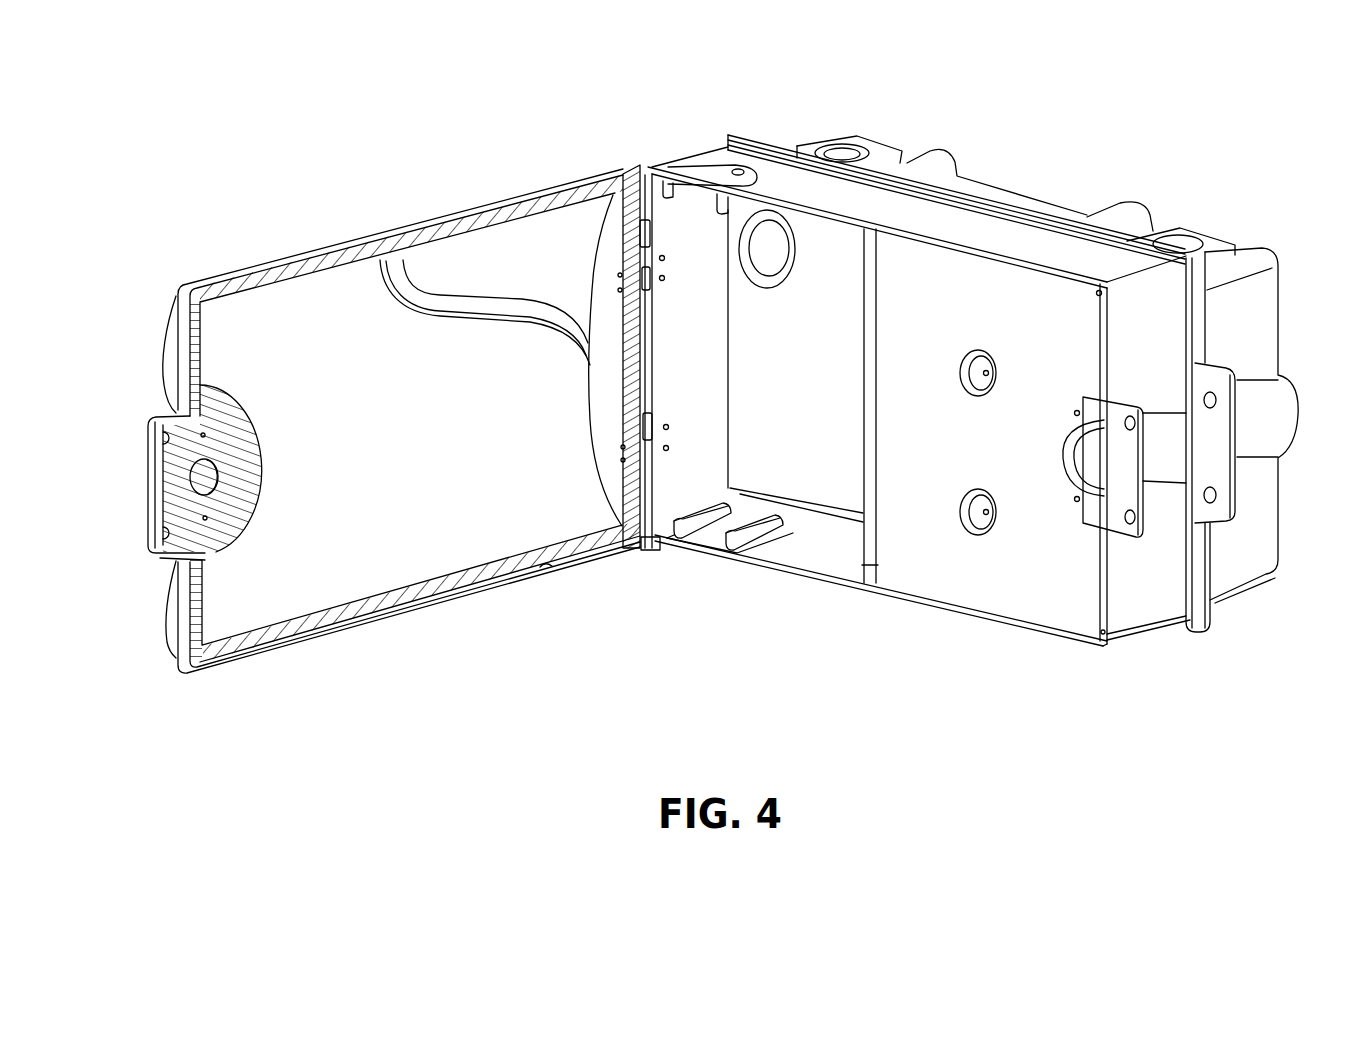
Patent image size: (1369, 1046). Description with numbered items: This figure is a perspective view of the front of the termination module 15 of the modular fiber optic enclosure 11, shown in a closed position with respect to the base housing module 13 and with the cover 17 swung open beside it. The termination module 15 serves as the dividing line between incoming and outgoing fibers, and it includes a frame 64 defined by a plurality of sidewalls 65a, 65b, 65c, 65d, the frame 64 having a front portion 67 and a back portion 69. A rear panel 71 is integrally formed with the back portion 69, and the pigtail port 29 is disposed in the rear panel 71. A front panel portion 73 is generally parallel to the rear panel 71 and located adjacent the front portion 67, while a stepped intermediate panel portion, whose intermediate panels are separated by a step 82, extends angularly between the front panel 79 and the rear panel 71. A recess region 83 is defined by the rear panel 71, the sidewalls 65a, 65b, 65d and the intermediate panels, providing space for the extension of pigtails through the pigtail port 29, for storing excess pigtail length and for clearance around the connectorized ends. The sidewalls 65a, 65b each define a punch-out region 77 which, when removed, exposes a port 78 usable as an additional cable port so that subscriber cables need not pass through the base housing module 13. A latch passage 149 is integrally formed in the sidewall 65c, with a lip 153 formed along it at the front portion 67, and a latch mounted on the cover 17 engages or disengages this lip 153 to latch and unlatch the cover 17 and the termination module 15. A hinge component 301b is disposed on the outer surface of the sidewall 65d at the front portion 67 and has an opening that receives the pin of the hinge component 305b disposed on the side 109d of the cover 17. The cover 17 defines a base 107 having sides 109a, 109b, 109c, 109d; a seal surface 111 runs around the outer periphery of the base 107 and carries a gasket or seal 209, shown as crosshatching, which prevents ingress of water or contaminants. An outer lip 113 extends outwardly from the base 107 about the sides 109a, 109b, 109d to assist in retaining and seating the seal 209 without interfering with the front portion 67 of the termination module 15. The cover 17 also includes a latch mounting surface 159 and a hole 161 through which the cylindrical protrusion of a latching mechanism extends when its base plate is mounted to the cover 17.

The modular fiber optic enclosure 11 is at (390, 420).
The base housing module 13 is at (1003, 420).
The termination module 15 is at (1022, 200).
The cover 17 is at (422, 212).
The pigtail port 29 is at (770, 275).
The frame 64 is at (851, 593).
The sidewall 65a is at (960, 222).
The sidewall 65b is at (957, 612).
The sidewall 65c is at (1139, 602).
The sidewall 65d is at (702, 397).
The front portion 67 is at (780, 557).
The back portion 69 is at (847, 545).
The rear panel 71 is at (793, 462).
The front panel portion 73 is at (1030, 590).
The punch-out region 77 is at (713, 177).
The port 78 is at (720, 160).
The front panel 79 is at (921, 435).
The step 82 is at (873, 582).
The recess region 83 is at (830, 318).
The base 107 is at (374, 471).
The side 109a is at (323, 247).
The side 109b is at (422, 620).
The side 109c is at (665, 550).
The side 109d is at (185, 628).
The seal surface 111 is at (483, 582).
The outer lip 113 is at (548, 567).
The latch passage 149 is at (1083, 458).
The lip 153 is at (1144, 522).
The latch mounting surface 159 is at (193, 437).
The hole 161 is at (203, 473).
The seal 209 is at (300, 632).
The hinge component 301b is at (631, 202).
The hinge component 305b is at (649, 281).